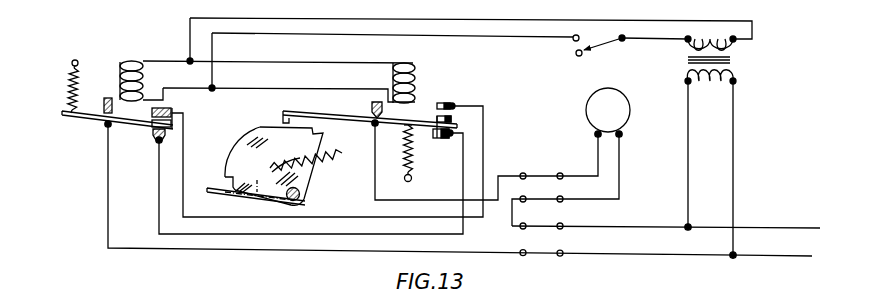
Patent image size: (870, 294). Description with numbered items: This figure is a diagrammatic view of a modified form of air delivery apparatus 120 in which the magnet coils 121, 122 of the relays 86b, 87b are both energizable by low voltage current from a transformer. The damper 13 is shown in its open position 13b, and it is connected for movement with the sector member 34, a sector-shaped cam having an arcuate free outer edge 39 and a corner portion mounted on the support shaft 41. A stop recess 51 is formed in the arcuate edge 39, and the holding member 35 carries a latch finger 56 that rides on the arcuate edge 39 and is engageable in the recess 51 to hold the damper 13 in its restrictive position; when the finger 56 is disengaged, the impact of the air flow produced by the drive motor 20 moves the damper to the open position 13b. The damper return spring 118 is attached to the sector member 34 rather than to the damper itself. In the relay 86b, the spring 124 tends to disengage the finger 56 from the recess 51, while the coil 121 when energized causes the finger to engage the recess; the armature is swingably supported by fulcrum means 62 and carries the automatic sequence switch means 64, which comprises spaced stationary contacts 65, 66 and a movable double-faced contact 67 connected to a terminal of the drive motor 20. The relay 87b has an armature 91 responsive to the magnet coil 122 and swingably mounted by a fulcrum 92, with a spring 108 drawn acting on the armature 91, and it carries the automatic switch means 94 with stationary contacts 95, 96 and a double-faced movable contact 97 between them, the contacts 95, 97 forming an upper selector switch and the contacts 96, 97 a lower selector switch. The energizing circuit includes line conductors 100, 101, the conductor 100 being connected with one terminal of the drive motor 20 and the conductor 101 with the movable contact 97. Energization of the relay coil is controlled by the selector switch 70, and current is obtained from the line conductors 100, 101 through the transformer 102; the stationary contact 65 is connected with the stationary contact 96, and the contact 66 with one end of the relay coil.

The damper 13 is at (279, 166).
The open position of damper 13b is at (208, 194).
The drive motor 20 is at (627, 120).
The sector member 34 is at (245, 156).
The holding member 35 is at (322, 116).
The arcuate free outer edge 39 is at (261, 134).
The support shaft 41 is at (301, 196).
The stop recess 51 is at (224, 180).
The latch finger 56 is at (281, 121).
The fulcrum means 62 is at (372, 100).
The automatic sequence switch means 64 is at (431, 116).
The stationary switch contact 65 is at (447, 104).
The stationary switch contact 66 is at (440, 139).
The movable double-faced contact 67 is at (450, 121).
The selector switch 70 is at (605, 43).
The relay 86b is at (458, 85).
The relay 87b is at (116, 67).
The armature 91 is at (115, 129).
The fulcrum 92 is at (104, 101).
The automatic switch means 94 is at (175, 108).
The stationary contact 95 is at (151, 112).
The stationary contact 96 is at (151, 141).
The movable contact 97 is at (174, 125).
The line conductor 100 is at (760, 228).
The line conductor 101 is at (760, 257).
The transformer 102 is at (742, 58).
The spring 108 is at (67, 80).
The damper return spring 118 is at (305, 153).
The air delivery apparatus 120 is at (538, 73).
The magnet coil 121 is at (416, 69).
The magnet coil 122 is at (144, 62).
The spring 124 is at (417, 164).